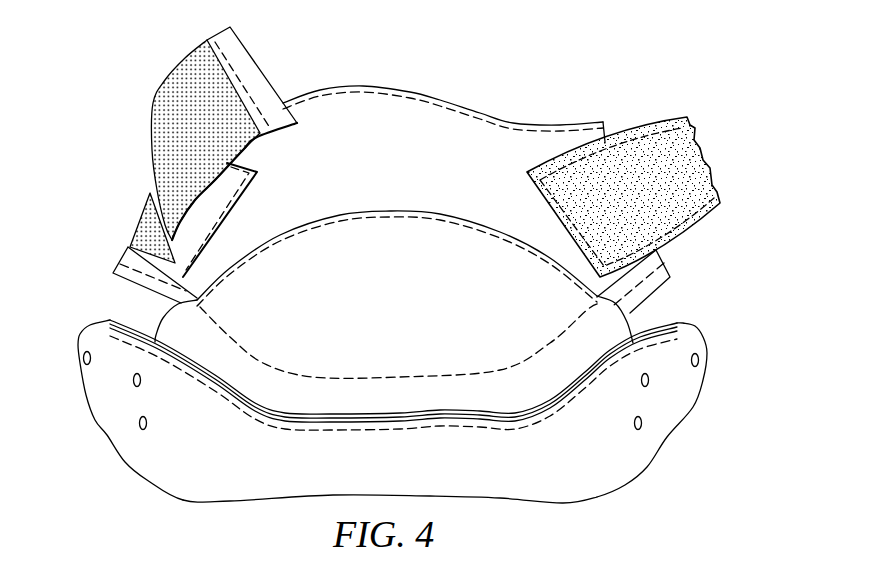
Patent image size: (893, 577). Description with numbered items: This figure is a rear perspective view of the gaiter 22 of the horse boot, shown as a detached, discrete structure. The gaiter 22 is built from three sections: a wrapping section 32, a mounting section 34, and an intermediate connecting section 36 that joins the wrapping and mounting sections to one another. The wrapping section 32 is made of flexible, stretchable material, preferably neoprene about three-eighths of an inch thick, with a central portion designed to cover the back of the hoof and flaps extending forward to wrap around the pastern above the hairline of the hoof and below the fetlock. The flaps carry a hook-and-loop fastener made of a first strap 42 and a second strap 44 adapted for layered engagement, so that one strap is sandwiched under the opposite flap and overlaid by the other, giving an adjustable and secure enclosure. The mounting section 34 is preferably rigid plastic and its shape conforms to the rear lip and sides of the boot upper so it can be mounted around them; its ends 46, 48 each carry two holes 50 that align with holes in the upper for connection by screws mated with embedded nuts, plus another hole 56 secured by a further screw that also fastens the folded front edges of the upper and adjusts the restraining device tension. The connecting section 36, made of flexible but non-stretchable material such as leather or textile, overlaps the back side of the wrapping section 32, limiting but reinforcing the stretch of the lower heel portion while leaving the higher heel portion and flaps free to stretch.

The gaiter 22 is at (575, 69).
The wrapping section 32 is at (437, 107).
The mounting section 34 is at (185, 500).
The connecting section 36 is at (415, 227).
The first strap 42 is at (703, 165).
The second strap 44 is at (155, 108).
The end of mounting section 46 is at (690, 345).
The end of mounting section 48 is at (93, 338).
The holes 50 is at (132, 382).
The hole 56 is at (82, 363).